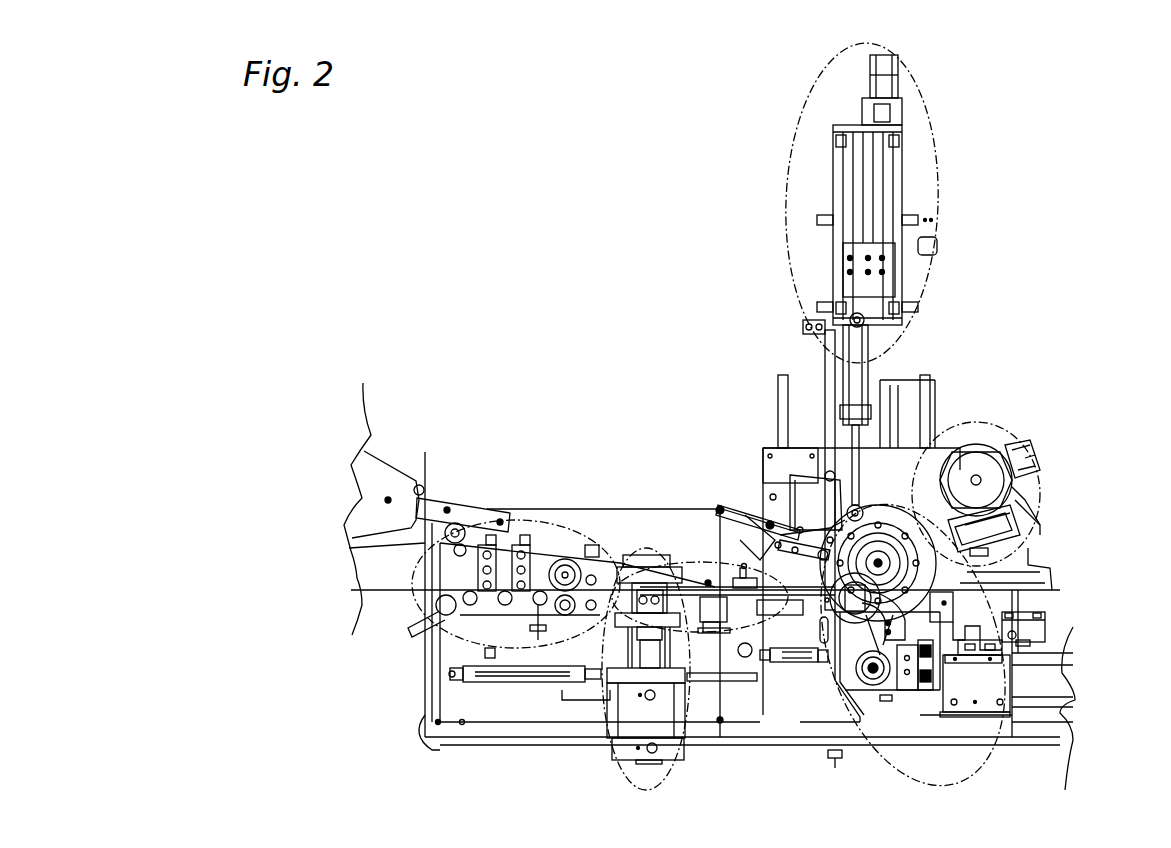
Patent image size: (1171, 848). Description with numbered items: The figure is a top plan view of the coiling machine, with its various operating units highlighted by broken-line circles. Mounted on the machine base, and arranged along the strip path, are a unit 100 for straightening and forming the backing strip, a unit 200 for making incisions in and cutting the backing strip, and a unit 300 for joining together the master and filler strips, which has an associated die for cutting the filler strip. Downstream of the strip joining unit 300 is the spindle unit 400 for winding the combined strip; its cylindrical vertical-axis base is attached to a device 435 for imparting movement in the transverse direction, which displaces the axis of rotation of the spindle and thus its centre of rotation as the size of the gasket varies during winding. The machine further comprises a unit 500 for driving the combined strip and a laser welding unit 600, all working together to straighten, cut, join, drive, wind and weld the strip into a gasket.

The unit for straightening and forming the backing strip 100 is at (456, 647).
The unit for making incisions in and cutting the backing strip 200 is at (598, 722).
The unit for joining together the strips 300 is at (738, 628).
The spindle unit 400 is at (827, 607).
The device for imparting movement in the transverse direction 435 is at (773, 497).
The unit for driving the combined strip 500 is at (990, 420).
The laser welding unit 600 is at (992, 603).